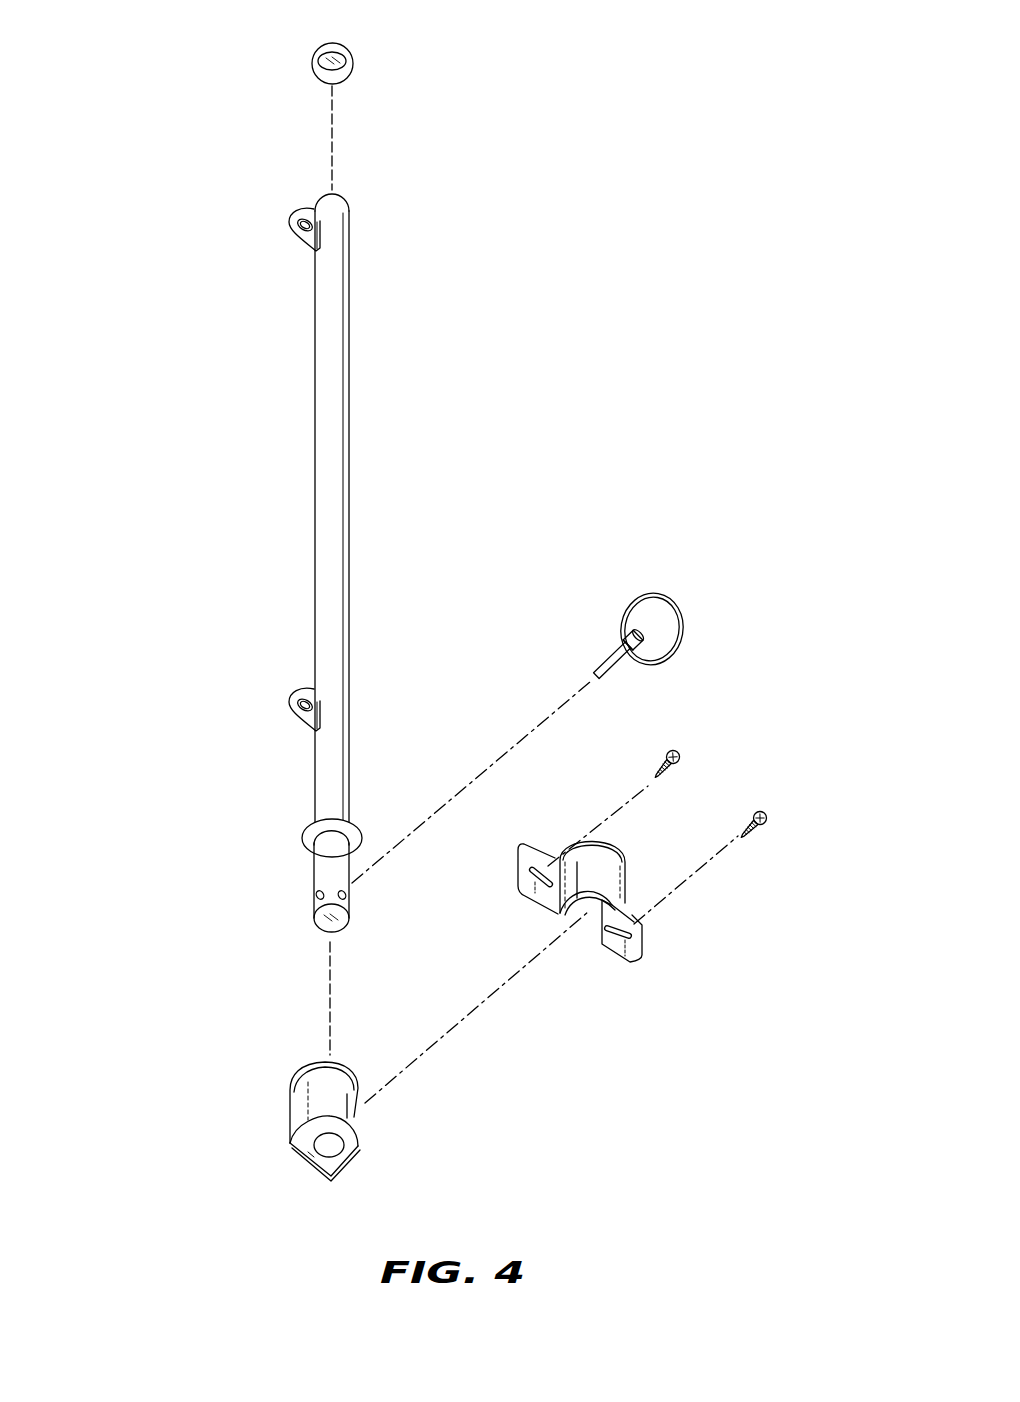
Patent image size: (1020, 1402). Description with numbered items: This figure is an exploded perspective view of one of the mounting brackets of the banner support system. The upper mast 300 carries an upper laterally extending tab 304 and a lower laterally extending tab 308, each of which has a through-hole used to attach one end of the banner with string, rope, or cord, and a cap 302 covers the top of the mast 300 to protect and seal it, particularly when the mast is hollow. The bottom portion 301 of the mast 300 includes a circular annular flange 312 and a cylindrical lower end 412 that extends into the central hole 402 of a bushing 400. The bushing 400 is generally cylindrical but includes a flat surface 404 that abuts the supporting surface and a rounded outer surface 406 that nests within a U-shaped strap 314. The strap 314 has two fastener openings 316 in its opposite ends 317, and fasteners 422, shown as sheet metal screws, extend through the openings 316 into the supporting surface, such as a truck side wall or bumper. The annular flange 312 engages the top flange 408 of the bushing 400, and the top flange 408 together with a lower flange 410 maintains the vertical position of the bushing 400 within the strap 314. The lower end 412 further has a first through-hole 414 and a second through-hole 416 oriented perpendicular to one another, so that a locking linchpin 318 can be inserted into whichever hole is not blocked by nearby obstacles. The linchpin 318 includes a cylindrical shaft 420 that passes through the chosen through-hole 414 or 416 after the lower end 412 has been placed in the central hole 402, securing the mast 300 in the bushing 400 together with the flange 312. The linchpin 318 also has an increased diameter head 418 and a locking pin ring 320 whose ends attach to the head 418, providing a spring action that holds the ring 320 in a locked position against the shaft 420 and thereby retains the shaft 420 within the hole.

The upper mast 300 is at (349, 367).
The bottom portion 301 is at (108, 717).
The cap 302 is at (311, 55).
The upper laterally extending tab 304 is at (289, 216).
The lower laterally extending tab 308 is at (289, 696).
The annular flange 312 is at (305, 830).
The U-shaped strap 314 is at (593, 912).
The fastener openings 316 is at (535, 834).
The opposite ends 317 is at (540, 910).
The locking linchpin 318 is at (672, 636).
The locking pin ring 320 is at (670, 605).
The bushing 400 is at (348, 1119).
The central hole 402 is at (352, 1172).
The flat surface 404 is at (290, 1116).
The rounded outer surface 406 is at (358, 1118).
The top flange 408 is at (303, 1070).
The lower flange 410 is at (290, 1128).
The lower end 412 is at (313, 878).
The first through-hole 414 is at (366, 893).
The second through-hole 416 is at (297, 895).
The increased diameter head 418 is at (607, 658).
The cylindrical shaft 420 is at (622, 640).
The fasteners 422 is at (680, 757).